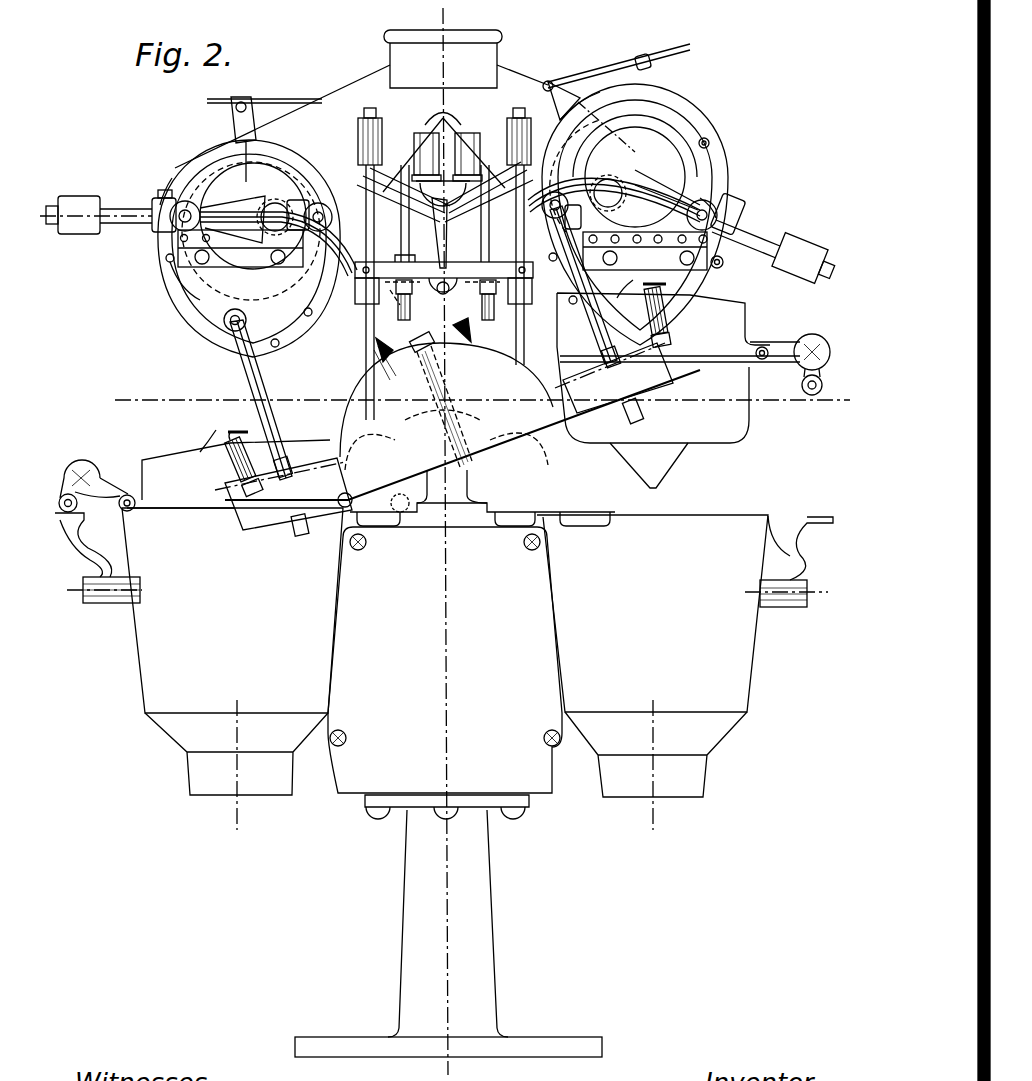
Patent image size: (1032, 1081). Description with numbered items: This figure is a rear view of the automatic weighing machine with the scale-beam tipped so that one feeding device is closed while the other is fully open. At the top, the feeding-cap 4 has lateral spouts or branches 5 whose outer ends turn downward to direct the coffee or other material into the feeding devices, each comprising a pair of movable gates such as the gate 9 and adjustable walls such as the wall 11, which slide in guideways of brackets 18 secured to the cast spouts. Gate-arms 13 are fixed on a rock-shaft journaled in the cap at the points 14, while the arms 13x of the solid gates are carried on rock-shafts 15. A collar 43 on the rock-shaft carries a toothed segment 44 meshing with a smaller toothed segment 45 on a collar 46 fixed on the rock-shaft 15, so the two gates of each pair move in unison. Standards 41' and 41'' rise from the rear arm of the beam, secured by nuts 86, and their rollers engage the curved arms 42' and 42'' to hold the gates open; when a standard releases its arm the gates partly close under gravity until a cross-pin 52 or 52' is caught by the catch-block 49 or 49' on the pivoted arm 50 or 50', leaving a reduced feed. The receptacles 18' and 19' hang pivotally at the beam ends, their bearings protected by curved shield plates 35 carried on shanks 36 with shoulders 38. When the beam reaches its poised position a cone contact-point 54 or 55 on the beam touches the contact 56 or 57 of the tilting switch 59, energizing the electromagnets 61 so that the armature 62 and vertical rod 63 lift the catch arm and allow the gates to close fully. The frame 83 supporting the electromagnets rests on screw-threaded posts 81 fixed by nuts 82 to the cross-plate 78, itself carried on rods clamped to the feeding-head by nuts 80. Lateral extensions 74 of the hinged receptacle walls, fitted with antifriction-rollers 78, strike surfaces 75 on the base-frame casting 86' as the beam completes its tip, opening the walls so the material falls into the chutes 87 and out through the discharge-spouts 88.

The feeding-cap 4 is at (452, 42).
The lateral spouts or branches 5 is at (361, 111).
The movable gate 9 is at (94, 230).
The adjustable wall 11 is at (442, 218).
The gate-arms 13 is at (218, 166).
The arms of the solid feeding-gates 13x is at (178, 190).
The rock-shaft pivot points 14 is at (178, 228).
The rock-shafts 15 is at (436, 211).
The brackets 18 is at (440, 280).
The receptacle 18' is at (663, 390).
The receptacle 19' is at (228, 474).
The shield plates 35 is at (215, 445).
The shanks 36 is at (222, 452).
The shoulders 38 is at (238, 492).
The standard 41' is at (585, 287).
The standard 41'' is at (263, 394).
The curved arm 42' is at (614, 184).
The curved arm 42'' is at (278, 264).
The collar 43 is at (716, 205).
The toothed segment 44 is at (245, 293).
The smaller toothed segment 45 is at (300, 205).
The collar 46 is at (312, 203).
The catch-block 49 is at (597, 60).
The catch-block 49' is at (241, 91).
The pivoted arm 50 is at (619, 66).
The pivoted arm 50' is at (264, 90).
The cross-pin 52 is at (591, 115).
The cross-pins 52' is at (226, 139).
The contact-point 54 is at (376, 347).
The contact-point 55 is at (463, 340).
The contact 56 is at (402, 322).
The contact 57 is at (497, 308).
The switch 59 is at (452, 258).
The electromagnets 61 is at (462, 150).
The armature 62 is at (480, 153).
The vertical rod 63 is at (444, 144).
The lateral extensions 74 is at (812, 334).
The surface 75 is at (72, 522).
The antifriction-rollers 78 is at (812, 396).
The nuts 80 is at (521, 116).
The screw-threaded posts 81 is at (445, 292).
The nuts 82 is at (414, 250).
The frame 83 is at (425, 183).
The nuts 86 is at (444, 448).
The casting 86' is at (471, 568).
The lateral extensions (chutes or hoppers) 87 is at (445, 610).
The discharge-spouts 88 is at (446, 754).